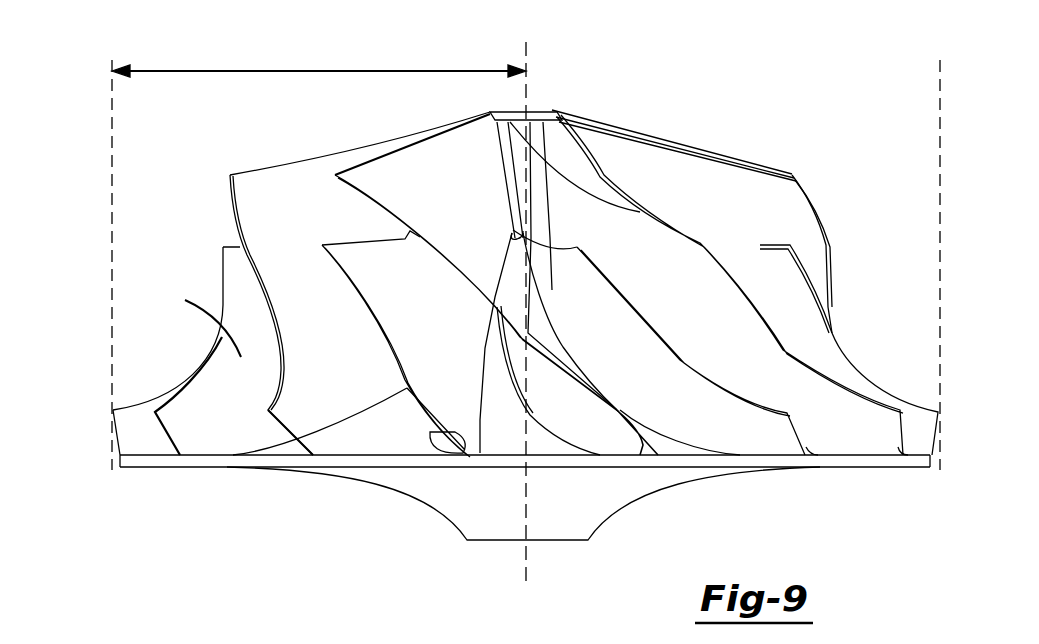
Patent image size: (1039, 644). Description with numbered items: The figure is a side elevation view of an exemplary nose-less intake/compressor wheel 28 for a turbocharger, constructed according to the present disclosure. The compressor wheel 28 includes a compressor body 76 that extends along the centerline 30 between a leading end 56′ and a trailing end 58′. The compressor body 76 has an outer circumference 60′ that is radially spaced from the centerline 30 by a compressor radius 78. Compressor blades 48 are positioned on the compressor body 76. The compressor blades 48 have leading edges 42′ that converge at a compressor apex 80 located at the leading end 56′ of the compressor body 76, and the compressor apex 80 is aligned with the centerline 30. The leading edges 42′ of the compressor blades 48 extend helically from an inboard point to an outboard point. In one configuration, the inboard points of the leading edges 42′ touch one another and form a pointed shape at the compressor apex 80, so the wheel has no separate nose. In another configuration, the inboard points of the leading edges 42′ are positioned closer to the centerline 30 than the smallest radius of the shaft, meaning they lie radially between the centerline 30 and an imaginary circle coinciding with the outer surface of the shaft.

The compressor wheel 28 is at (762, 102).
The centerline 30 is at (528, 55).
The leading edges 42′ is at (362, 165).
The compressor blades 48 is at (298, 302).
The leading end 56′ is at (620, 140).
The trailing end 58′ is at (389, 426).
The outer circumference 60′ is at (112, 122).
The compressor body 76 is at (493, 408).
The compressor radius 78 is at (210, 71).
The compressor apex 80 is at (516, 111).